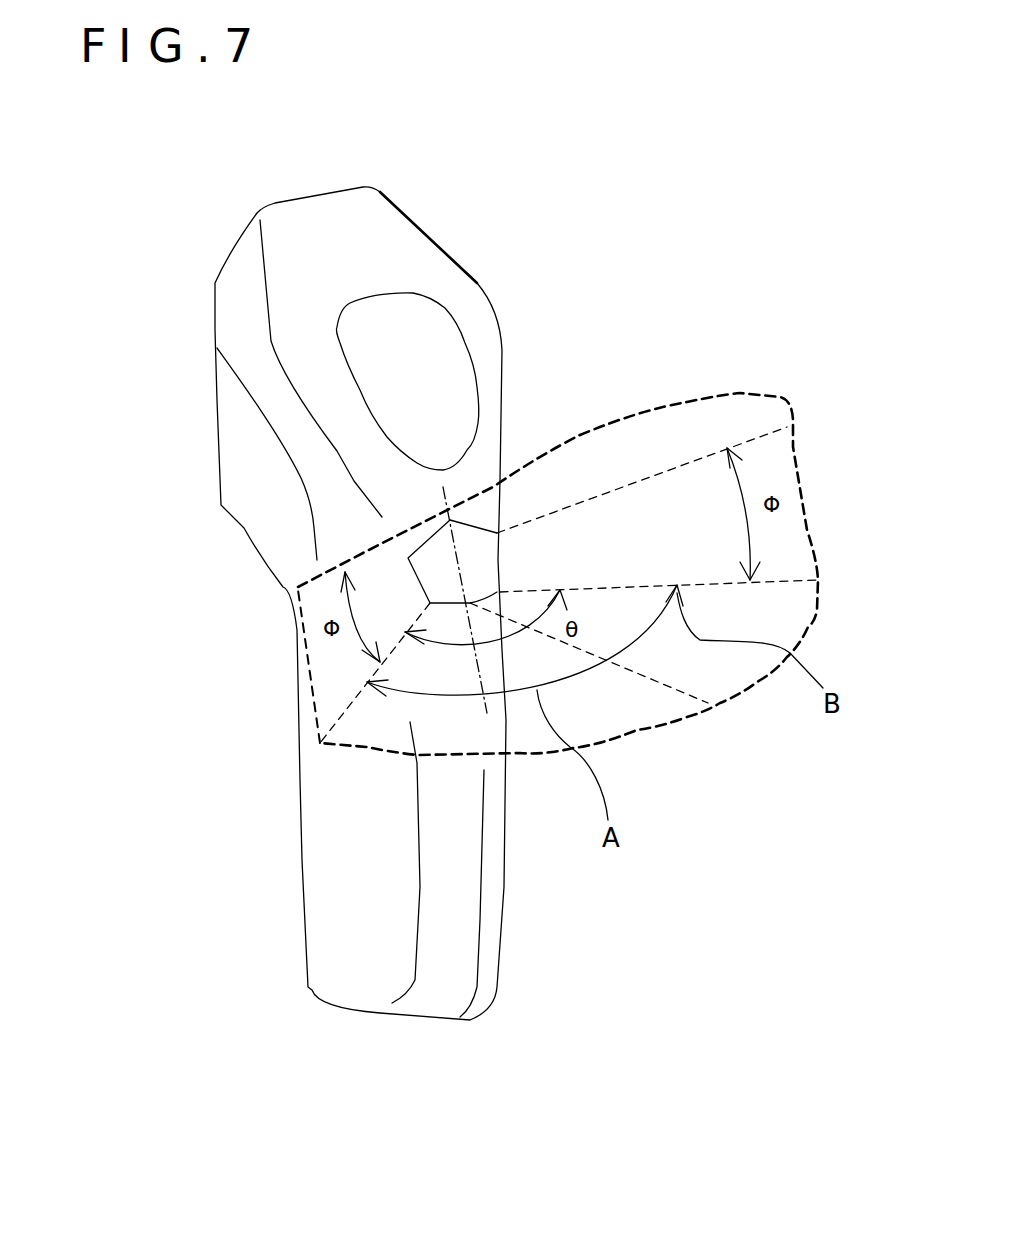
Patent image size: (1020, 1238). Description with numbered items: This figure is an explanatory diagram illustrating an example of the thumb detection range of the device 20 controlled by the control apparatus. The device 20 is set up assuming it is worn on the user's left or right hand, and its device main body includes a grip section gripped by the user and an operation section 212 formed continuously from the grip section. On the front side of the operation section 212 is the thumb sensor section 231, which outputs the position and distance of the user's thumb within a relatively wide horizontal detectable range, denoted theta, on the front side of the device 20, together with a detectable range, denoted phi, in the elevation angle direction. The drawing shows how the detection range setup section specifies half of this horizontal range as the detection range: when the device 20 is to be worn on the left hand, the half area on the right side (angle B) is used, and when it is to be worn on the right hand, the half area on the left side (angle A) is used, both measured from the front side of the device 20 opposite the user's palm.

The operation section 212 is at (525, 240).
The thumb sensor section 231 is at (478, 565).
The device 20 is at (363, 920).